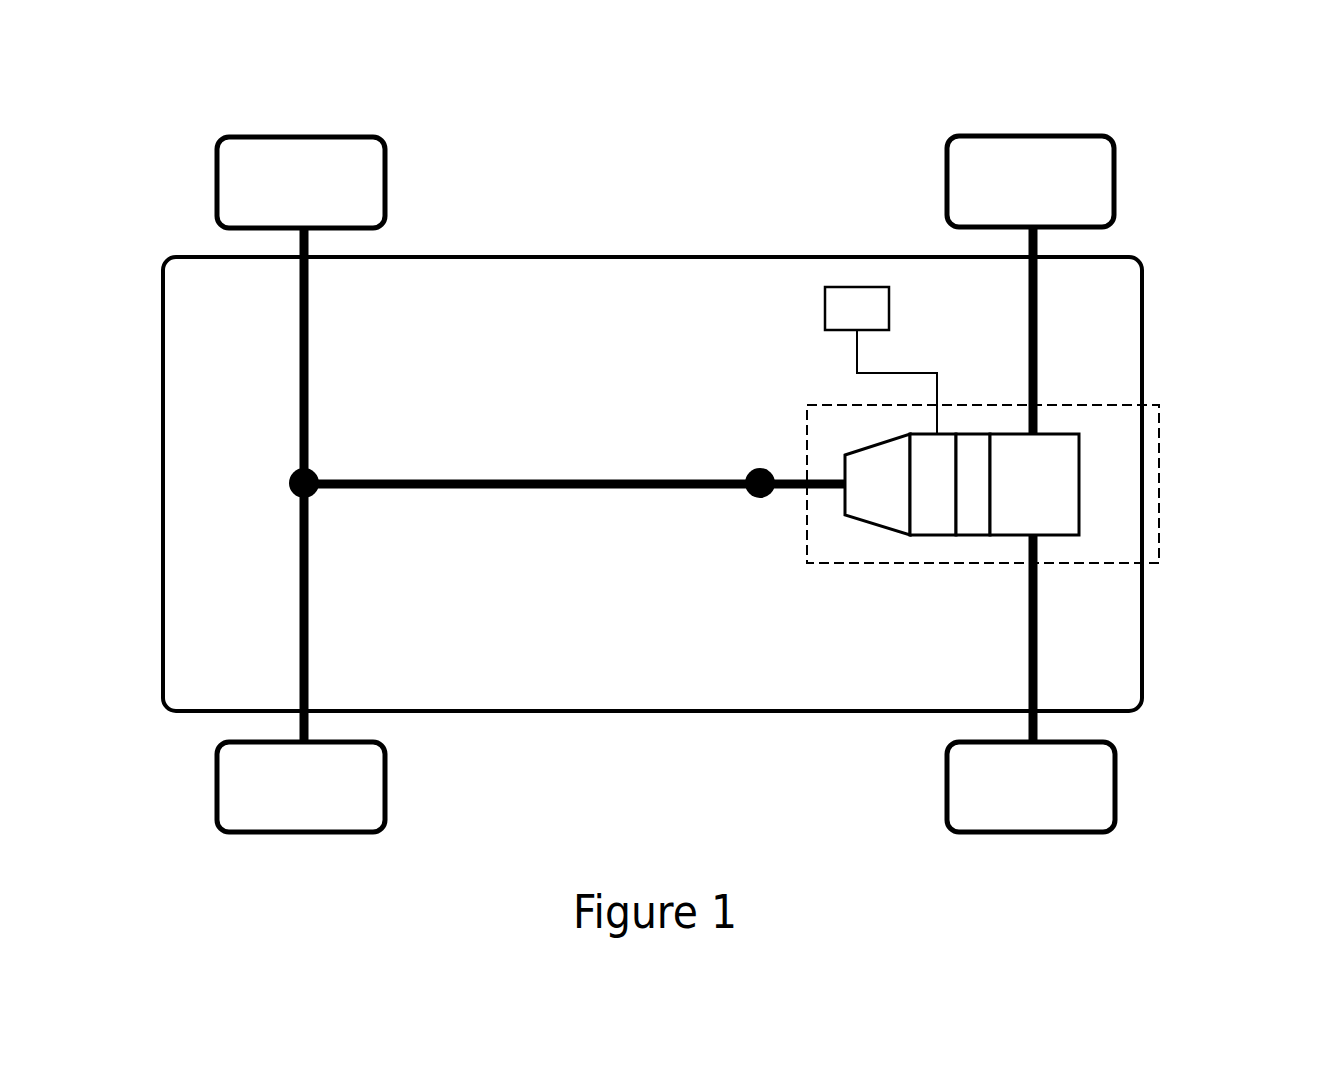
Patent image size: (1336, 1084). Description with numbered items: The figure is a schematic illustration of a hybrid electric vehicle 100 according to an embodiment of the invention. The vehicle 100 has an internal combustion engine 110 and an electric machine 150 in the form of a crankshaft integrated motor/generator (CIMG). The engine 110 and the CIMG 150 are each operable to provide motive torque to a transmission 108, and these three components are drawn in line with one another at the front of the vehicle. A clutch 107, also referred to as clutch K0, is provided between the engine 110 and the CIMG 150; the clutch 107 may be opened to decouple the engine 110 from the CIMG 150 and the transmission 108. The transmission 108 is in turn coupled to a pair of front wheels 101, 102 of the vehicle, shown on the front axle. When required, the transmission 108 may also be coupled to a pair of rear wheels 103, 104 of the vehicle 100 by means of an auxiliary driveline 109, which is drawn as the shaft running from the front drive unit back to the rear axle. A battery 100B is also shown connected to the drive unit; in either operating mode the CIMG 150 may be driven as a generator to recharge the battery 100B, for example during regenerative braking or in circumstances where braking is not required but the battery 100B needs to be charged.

The hybrid electric vehicle 100 is at (1258, 136).
The battery 100B is at (855, 293).
The front wheel 101 is at (1098, 192).
The front wheel 102 is at (1100, 778).
The rear wheel 103 is at (232, 192).
The rear wheel 104 is at (235, 775).
The clutch 107 is at (973, 442).
The transmission 108 is at (865, 462).
The auxiliary driveline 109 is at (222, 513).
The internal combustion engine 110 is at (1053, 479).
The electric machine 150 is at (930, 525).